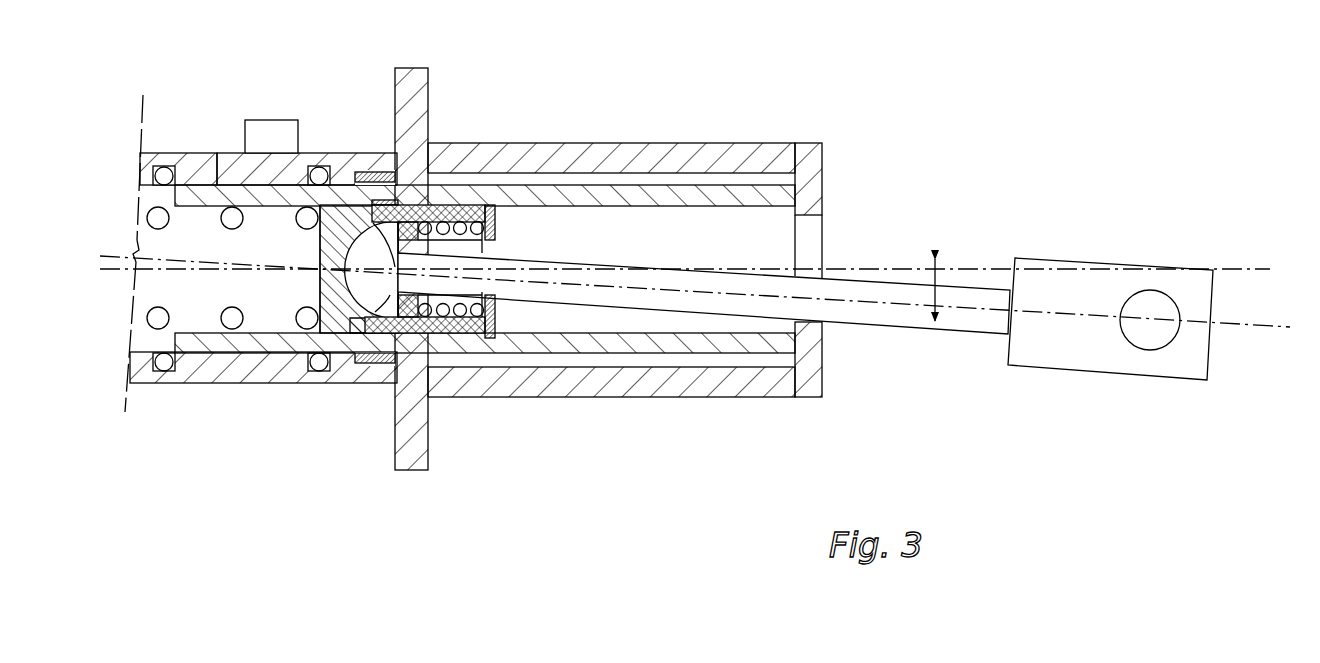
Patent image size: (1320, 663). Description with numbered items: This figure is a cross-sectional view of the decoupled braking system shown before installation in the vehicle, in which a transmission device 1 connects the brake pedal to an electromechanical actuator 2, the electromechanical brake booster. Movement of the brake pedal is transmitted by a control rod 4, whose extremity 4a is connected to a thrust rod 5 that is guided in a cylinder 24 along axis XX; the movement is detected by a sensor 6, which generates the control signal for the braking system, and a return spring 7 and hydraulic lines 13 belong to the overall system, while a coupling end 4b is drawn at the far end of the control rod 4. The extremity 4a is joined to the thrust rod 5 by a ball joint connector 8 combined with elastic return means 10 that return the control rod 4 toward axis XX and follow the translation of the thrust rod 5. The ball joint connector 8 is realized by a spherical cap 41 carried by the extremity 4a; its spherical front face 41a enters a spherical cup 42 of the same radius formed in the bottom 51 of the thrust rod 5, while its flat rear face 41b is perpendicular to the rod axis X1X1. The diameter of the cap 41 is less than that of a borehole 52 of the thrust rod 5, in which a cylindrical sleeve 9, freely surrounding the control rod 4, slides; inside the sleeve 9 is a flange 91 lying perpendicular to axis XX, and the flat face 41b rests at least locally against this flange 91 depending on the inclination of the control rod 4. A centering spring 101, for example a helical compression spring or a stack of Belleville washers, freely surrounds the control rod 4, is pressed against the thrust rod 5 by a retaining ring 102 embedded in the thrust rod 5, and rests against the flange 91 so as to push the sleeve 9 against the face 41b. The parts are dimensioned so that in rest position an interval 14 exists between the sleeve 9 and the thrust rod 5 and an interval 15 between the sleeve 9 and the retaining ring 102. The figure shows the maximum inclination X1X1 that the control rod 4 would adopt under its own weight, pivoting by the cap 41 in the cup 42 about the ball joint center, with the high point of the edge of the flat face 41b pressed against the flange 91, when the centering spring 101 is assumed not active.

The transmission device 1 is at (684, 277).
The electromechanical actuator 2 is at (447, 223).
The control rod 4 is at (846, 286).
The extremity 4a is at (405, 262).
The coupling end 4b is at (1068, 290).
The thrust rod 5 is at (301, 255).
The sensor 6 is at (280, 147).
The return spring 7 is at (158, 218).
The ball joint connector 8 is at (335, 274).
The cylindrical sleeve 9 is at (455, 206).
The elastic return means 10 is at (475, 305).
The hydraulic lines 13 is at (215, 170).
The interval 14 is at (372, 172).
The interval 15 is at (492, 205).
The cylinder 24 is at (140, 352).
The spherical cap 41 is at (378, 365).
The spherical front face 41a is at (360, 174).
The flat rear face 41b is at (392, 202).
The spherical cup 42 is at (348, 335).
The bottom 51 is at (322, 260).
The borehole 52 is at (723, 245).
The flange 91 is at (447, 333).
The centering spring 101 is at (484, 335).
The retaining ring 102 is at (542, 366).